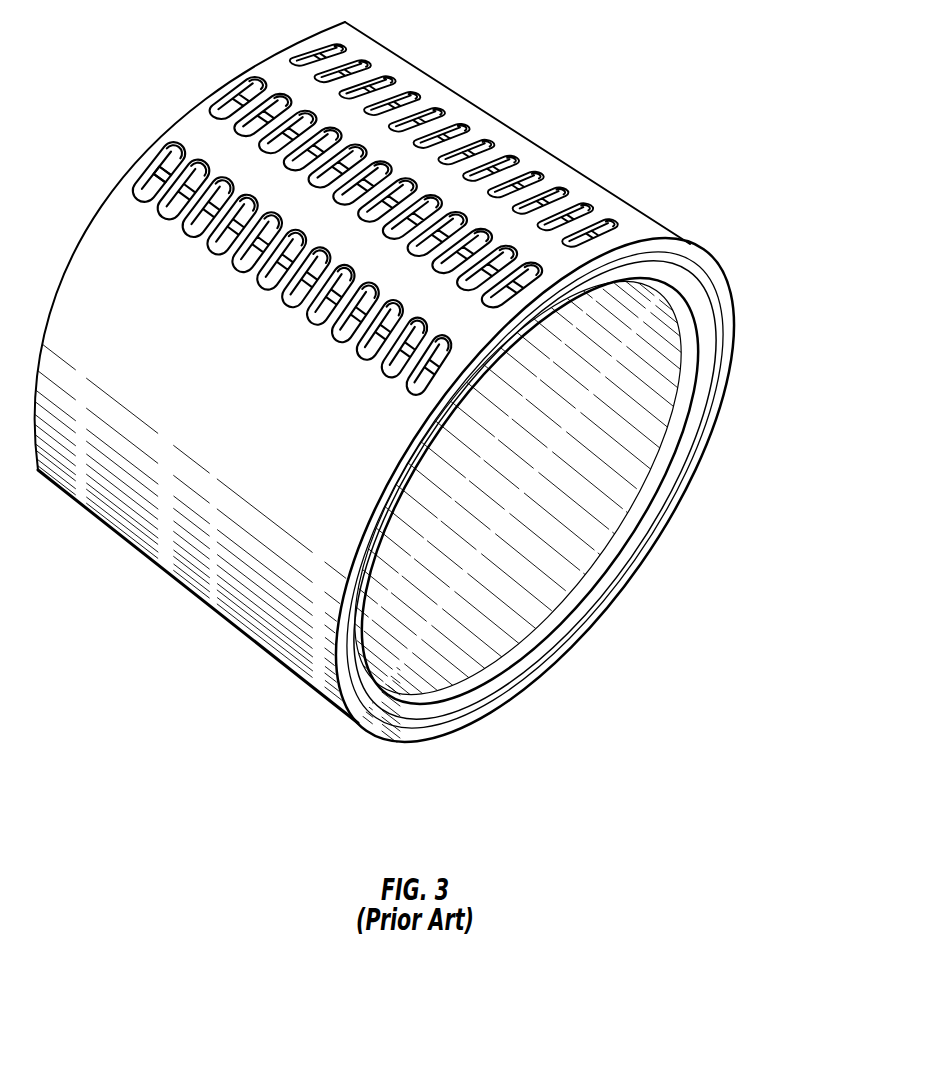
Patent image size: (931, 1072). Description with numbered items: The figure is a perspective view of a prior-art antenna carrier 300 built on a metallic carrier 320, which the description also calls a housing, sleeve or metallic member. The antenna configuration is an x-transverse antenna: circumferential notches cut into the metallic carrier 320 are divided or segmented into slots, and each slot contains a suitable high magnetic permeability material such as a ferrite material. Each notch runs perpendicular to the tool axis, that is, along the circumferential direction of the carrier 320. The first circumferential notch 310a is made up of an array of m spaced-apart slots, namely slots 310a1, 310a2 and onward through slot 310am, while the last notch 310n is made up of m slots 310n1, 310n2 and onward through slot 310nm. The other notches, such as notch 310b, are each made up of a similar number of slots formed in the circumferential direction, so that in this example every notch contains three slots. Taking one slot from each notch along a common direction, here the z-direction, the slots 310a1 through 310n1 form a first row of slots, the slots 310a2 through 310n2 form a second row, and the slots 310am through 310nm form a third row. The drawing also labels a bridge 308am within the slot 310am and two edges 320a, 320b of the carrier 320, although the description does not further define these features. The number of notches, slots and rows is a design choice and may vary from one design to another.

The antenna carrier 300 is at (623, 50).
The bridge in slot 308am is at (133, 190).
The first circumferential notch 310a is at (333, 30).
The slot 310a1 is at (324, 52).
The slot 310a2 is at (248, 84).
The slot 310am is at (164, 160).
The notch 310b is at (384, 60).
The last notch 310n is at (668, 232).
The slot 310n1 is at (600, 222).
The slot 310n2 is at (497, 310).
The slot 310nm is at (406, 396).
The metallic carrier 320 is at (560, 163).
The ring edge 320a is at (410, 757).
The ring edge 320b is at (742, 378).